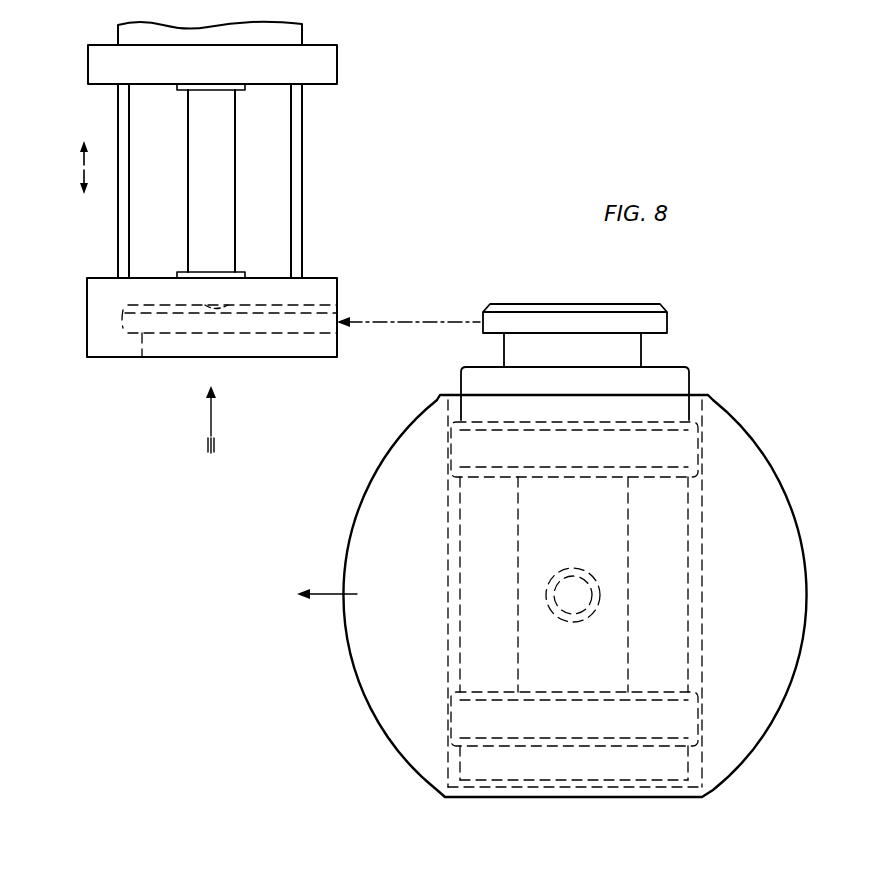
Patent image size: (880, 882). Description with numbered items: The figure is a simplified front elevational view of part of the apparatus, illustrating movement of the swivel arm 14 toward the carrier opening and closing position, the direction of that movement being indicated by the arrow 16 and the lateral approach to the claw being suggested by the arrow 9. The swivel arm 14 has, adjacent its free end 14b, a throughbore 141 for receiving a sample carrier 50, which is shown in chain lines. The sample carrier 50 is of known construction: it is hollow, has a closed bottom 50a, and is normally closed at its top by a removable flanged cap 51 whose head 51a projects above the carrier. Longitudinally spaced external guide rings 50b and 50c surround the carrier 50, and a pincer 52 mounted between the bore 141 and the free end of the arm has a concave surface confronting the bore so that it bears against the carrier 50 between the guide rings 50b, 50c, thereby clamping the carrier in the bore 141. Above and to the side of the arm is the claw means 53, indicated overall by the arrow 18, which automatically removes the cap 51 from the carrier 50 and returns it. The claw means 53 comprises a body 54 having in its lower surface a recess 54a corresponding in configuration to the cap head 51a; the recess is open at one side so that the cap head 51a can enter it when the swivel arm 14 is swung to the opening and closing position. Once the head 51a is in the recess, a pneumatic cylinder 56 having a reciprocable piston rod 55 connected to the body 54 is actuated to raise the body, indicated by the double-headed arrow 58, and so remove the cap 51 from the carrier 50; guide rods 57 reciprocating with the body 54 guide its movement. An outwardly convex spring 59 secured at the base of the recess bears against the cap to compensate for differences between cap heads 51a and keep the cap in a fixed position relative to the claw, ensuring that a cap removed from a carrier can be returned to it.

The direction of movement 9 is at (211, 435).
The swivel arm 14 is at (550, 552).
The free end 14b is at (728, 440).
The direction of movement 16 is at (324, 592).
The transfer device 18 is at (246, 189).
The sample carrier 50 is at (571, 628).
The closed bottom 50a is at (604, 784).
The guide ring 50b is at (456, 465).
The guide ring 50c is at (462, 722).
The flanged cap 51 is at (586, 345).
The cap head 51a is at (524, 312).
The pincer 52 is at (615, 598).
The claw means 53 is at (340, 293).
The body 54 is at (100, 284).
The recess 54a is at (120, 316).
The piston rod 55 is at (227, 175).
The pneumatic cylinder 56 is at (332, 73).
The guide rods 57 is at (129, 158).
The direction of movement 58 is at (80, 166).
The spring 59 is at (230, 304).
The throughbore 141 is at (456, 573).